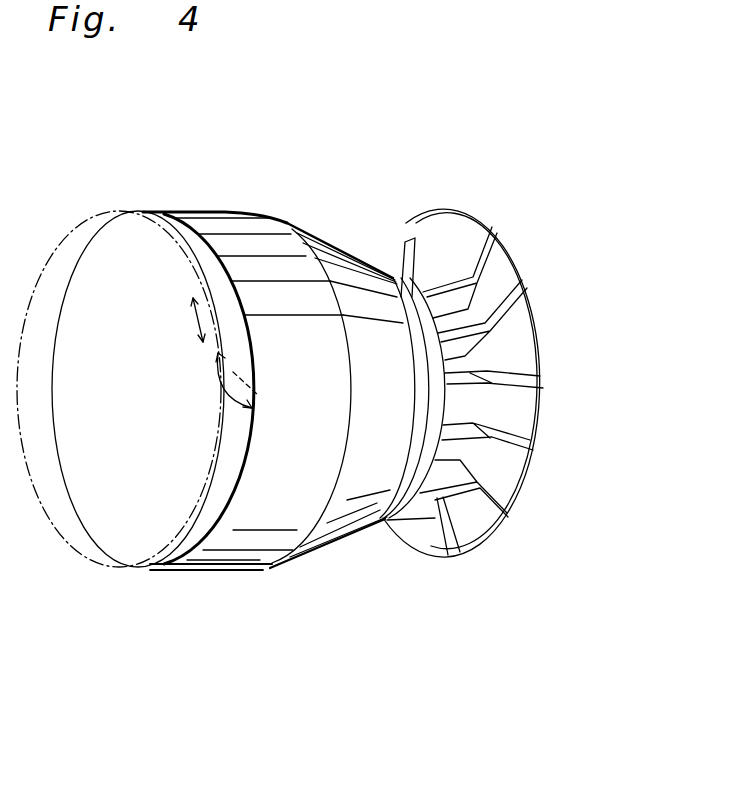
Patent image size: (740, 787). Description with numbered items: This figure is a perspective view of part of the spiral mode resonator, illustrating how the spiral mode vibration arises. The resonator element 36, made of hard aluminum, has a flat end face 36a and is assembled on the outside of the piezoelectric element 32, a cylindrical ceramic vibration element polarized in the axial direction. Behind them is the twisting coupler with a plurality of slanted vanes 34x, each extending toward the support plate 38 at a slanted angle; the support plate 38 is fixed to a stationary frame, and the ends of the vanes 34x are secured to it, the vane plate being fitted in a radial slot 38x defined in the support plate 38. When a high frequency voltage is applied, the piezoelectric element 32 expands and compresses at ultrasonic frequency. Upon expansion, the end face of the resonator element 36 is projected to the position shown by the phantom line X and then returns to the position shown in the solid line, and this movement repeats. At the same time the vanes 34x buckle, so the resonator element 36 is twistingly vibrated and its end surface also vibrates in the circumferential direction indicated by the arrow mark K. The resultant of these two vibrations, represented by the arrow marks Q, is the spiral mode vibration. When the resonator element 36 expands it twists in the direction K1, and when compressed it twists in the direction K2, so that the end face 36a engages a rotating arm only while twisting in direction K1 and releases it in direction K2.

The piezoelectric element 32 is at (387, 277).
The vanes 34x is at (445, 275).
The resonator element 36 is at (237, 218).
The end face 36a is at (190, 541).
The support plate 38 is at (467, 207).
The radial slot 38x is at (535, 284).
The arrow mark K is at (193, 320).
The direction K1 is at (182, 310).
The direction K2 is at (195, 357).
The arrow marks Q is at (225, 377).
The phantom line X is at (78, 557).